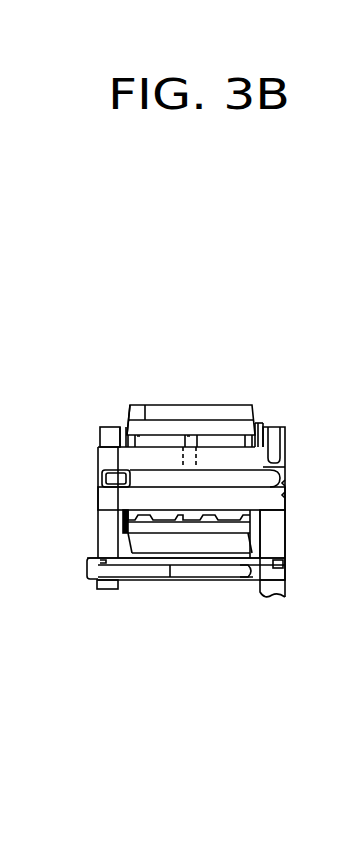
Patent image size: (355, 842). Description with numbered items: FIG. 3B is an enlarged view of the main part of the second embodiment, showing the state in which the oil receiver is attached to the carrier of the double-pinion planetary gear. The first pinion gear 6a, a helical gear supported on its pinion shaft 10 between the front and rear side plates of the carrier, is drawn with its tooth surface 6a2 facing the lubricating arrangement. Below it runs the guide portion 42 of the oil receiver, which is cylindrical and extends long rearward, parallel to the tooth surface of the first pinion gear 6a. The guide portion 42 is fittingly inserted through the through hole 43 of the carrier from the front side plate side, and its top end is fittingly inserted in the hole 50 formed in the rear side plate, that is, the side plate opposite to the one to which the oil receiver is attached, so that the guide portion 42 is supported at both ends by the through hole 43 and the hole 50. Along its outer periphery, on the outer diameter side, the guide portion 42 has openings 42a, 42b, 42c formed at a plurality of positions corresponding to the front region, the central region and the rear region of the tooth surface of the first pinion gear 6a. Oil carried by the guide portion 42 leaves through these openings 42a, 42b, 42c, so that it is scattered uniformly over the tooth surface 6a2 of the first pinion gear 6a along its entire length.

The first pinion gear 6a is at (212, 430).
The tooth surface 6a2 is at (142, 404).
The pinion shaft 10 is at (285, 467).
The hole 50 is at (285, 563).
The guide portion 42 is at (203, 578).
The opening 42a is at (222, 566).
The opening 42b is at (183, 566).
The opening 42c is at (142, 566).
The through hole 43 is at (97, 558).